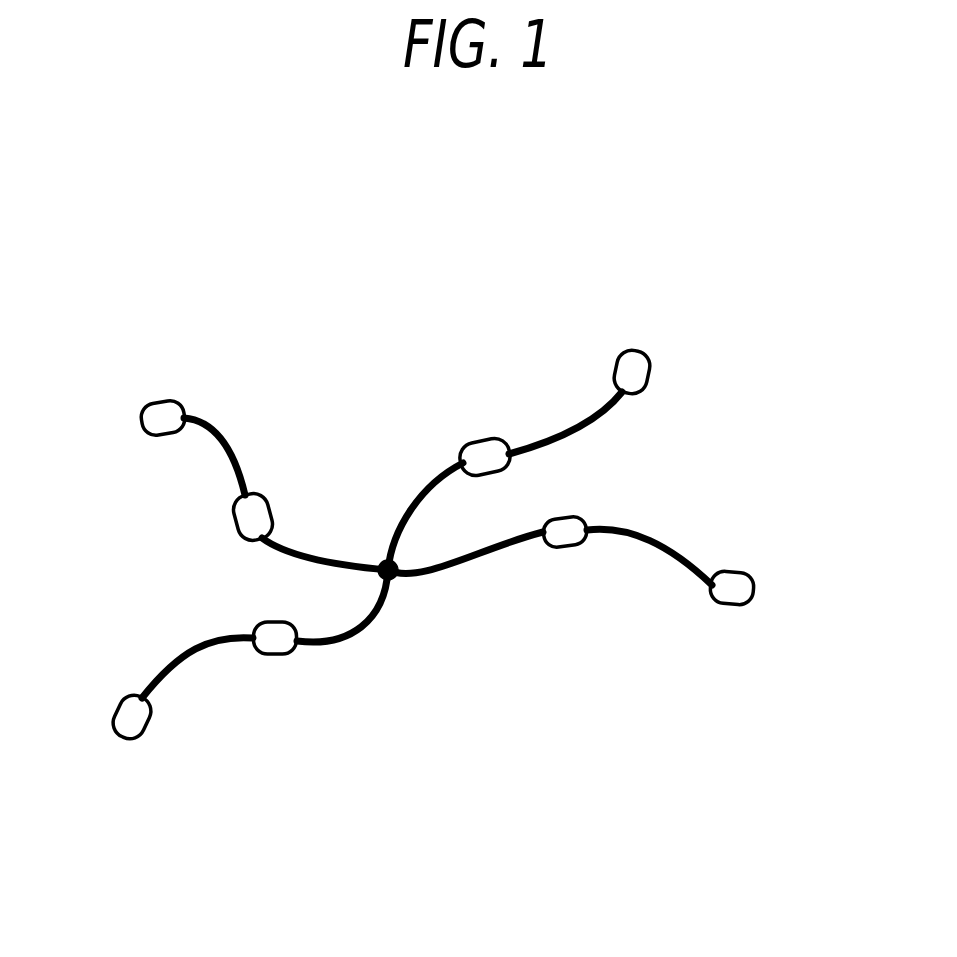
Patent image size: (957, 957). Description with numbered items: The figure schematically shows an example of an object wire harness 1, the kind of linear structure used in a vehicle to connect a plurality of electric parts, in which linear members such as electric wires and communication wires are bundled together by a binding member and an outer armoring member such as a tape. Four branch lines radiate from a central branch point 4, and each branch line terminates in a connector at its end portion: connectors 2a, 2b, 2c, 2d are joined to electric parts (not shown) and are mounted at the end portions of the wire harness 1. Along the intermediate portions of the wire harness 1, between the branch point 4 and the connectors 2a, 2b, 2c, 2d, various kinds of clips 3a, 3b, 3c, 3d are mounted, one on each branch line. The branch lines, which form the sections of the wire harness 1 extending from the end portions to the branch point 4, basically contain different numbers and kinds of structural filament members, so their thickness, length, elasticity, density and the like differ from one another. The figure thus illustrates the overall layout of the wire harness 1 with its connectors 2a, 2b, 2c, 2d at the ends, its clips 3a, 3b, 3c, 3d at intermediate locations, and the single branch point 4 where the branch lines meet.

The wire harness 1 is at (239, 433).
The connector 2a is at (168, 403).
The connector 2b is at (742, 570).
The connector 2c is at (650, 372).
The connector 2d is at (113, 730).
The clip 3a is at (267, 503).
The clip 3b is at (567, 518).
The clip 3c is at (487, 443).
The clip 3d is at (273, 655).
The branch point 4 is at (393, 583).